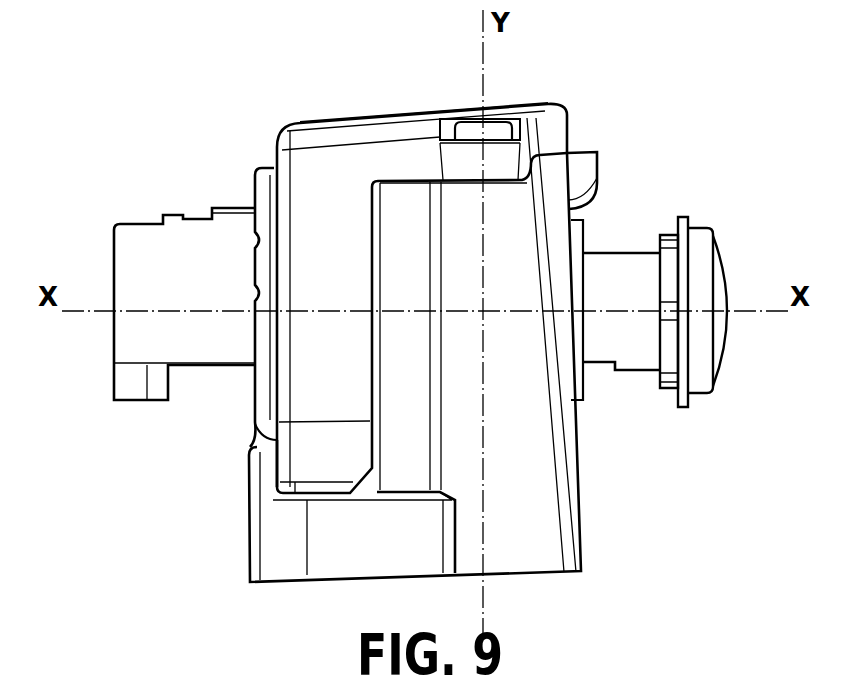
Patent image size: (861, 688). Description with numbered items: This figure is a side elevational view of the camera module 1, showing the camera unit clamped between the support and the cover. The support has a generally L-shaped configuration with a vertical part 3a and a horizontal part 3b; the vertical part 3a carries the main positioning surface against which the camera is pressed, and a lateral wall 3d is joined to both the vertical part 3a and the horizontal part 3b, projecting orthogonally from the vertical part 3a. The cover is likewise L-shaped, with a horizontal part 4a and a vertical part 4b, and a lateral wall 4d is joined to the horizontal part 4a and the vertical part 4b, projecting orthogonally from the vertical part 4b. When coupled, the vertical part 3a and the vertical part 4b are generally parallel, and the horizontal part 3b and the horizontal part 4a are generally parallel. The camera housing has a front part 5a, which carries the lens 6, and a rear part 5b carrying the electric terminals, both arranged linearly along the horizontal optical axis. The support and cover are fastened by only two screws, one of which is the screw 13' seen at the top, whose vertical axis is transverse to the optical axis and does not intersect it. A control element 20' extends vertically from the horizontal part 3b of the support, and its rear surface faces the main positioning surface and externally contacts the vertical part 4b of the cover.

The camera module 1 is at (172, 180).
The vertical part of the support 3a is at (575, 435).
The horizontal part of the support 3b is at (333, 553).
The lateral wall of the support 3d is at (403, 445).
The horizontal part of the cover 4a is at (360, 118).
The vertical part of the cover 4b is at (305, 378).
The lateral wall of the cover 4d is at (320, 175).
The front part of the camera housing 5a is at (603, 277).
The rear part of the camera housing 5b is at (162, 330).
The lens 6 is at (727, 280).
The screw 13' is at (542, 79).
The control element 20' is at (192, 374).